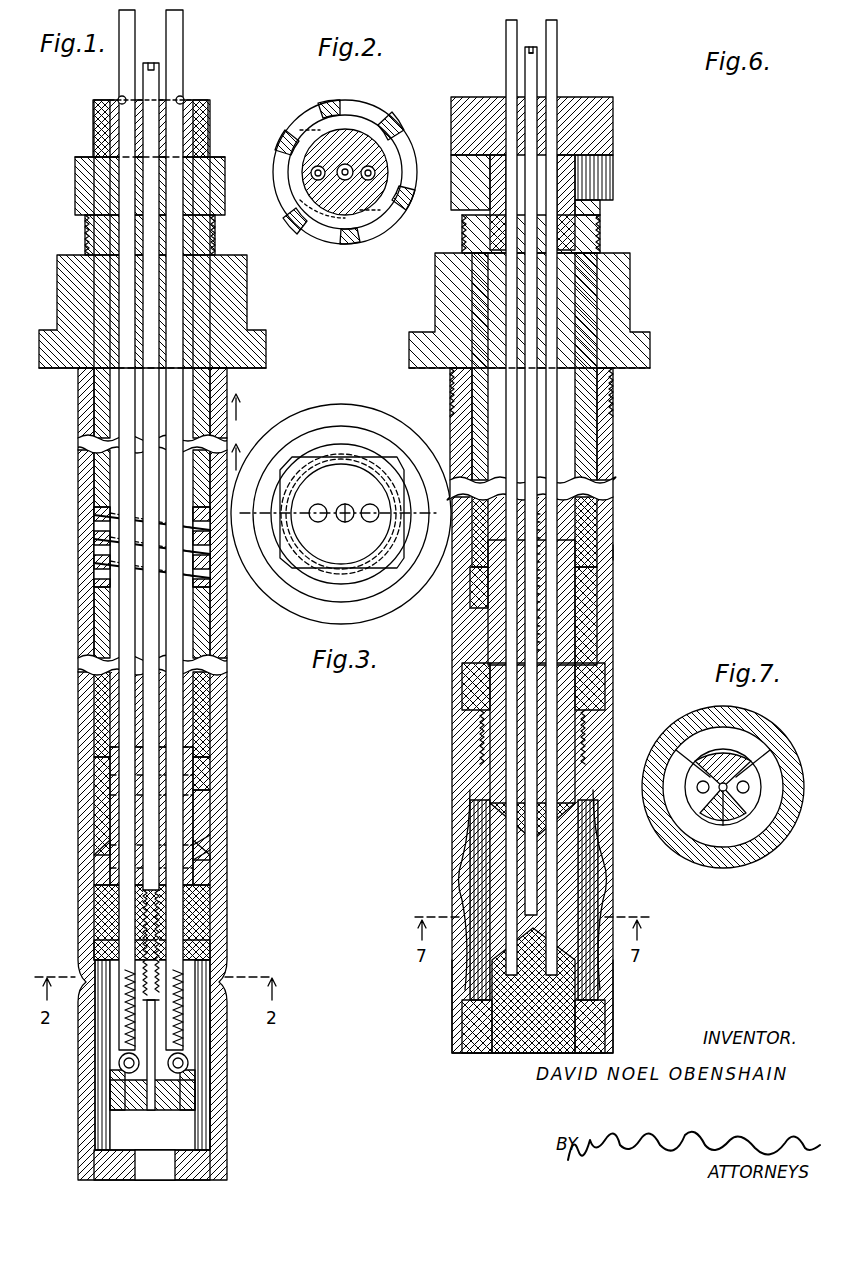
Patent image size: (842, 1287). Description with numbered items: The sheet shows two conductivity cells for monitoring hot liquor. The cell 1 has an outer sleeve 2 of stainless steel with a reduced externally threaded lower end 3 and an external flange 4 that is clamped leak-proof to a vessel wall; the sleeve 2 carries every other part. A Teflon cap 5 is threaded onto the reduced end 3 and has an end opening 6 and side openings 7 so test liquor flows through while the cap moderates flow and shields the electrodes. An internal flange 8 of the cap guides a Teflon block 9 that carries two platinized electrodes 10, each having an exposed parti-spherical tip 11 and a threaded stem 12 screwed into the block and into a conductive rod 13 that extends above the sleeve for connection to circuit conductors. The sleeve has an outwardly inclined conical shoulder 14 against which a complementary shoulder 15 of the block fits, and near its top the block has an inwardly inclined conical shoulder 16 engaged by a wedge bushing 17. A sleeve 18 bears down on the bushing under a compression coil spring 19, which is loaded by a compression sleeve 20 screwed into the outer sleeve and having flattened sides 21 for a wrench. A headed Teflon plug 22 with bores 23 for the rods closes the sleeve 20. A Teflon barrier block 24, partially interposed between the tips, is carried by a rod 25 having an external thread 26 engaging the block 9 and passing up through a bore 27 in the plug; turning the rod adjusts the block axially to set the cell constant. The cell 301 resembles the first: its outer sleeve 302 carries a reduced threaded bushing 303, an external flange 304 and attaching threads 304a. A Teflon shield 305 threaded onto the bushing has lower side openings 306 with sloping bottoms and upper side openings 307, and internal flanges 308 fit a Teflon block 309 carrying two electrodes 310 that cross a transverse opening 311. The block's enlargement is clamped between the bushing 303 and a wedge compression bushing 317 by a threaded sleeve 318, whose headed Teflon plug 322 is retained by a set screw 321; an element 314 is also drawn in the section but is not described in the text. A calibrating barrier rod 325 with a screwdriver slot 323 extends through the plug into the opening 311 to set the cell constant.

In FIG. 1, the cell 1 is at (214, 140).
In FIG. 2, the cell 1 is at (315, 146).
In FIG. 1, the outer sleeve 2 is at (230, 668).
In FIG. 1, the reduced externally threaded lower end 3 is at (212, 906).
In FIG. 1, the external flange 4 is at (268, 355).
In FIG. 3, the external flange 4 is at (328, 406).
In FIG. 1, the cap 5 is at (232, 1092).
In FIG. 2, the cap 5 is at (372, 244).
In FIG. 1, the end opening 6 is at (165, 1162).
In FIG. 1, the side openings 7 is at (226, 975).
In FIG. 2, the side openings 7 is at (340, 244).
In FIG. 1, the internal flange 8 is at (212, 950).
In FIG. 1, the Teflon block 9 is at (212, 848).
In FIG. 1, the platinized electrodes 10 is at (188, 1072).
In FIG. 1, the parti-spherical tip 11 is at (190, 1063).
In FIG. 1, the threaded stem 12 is at (184, 1020).
In FIG. 2, the threaded stem 12 is at (371, 166).
In FIG. 1, the conductive rod 13 is at (182, 830).
In FIG. 3, the conductive rod 13 is at (370, 504).
In FIG. 1, the conical shoulder 14 is at (200, 862).
In FIG. 1, the complementary shoulder 15 is at (212, 878).
In FIG. 1, the conical shoulder 16 is at (210, 788).
In FIG. 1, the wedge bushing 17 is at (200, 770).
In FIG. 1, the sleeve 18 is at (205, 640).
In FIG. 1, the compression coil spring 19 is at (94, 573).
In FIG. 1, the compression sleeve 20 is at (228, 201).
In FIG. 2, the compression sleeve 20 is at (305, 223).
In FIG. 3, the compression sleeve 20 is at (378, 450).
In FIG. 3, the flattened sides 21 is at (345, 570).
In FIG. 1, the headed Teflon plug 22 is at (135, 120).
In FIG. 3, the headed Teflon plug 22 is at (375, 470).
In FIG. 1, the bores 23 is at (184, 98).
In FIG. 1, the barrier block 24 is at (196, 1105).
In FIG. 1, the rod 25 is at (150, 1105).
In FIG. 2, the rod 25 is at (345, 162).
In FIG. 3, the rod 25 is at (345, 523).
In FIG. 1, the external thread 26 is at (143, 925).
In FIG. 1, the bore 27 is at (142, 178).
In FIG. 6, the cell 301 is at (626, 544).
In FIG. 6, the outer sleeve 302 is at (600, 490).
In FIG. 6, the reduced threaded bushing 303 is at (472, 700).
In FIG. 6, the external flange 304 is at (650, 340).
In FIG. 6, the attaching threads 304a is at (615, 396).
In FIG. 6, the shield 305 is at (622, 886).
In FIG. 7, the shield 305 is at (762, 860).
In FIG. 6, the lower side openings 306 is at (612, 1000).
In FIG. 6, the upper side openings 307 is at (600, 830).
In FIG. 6, the internal flanges 308 is at (590, 1026).
In FIG. 6, the Teflon block 309 is at (512, 1056).
In FIG. 7, the Teflon block 309 is at (727, 826).
In FIG. 6, the platinized electrodes 310 is at (558, 50).
In FIG. 6, the transverse opening 311 is at (570, 912).
In FIG. 7, the transverse opening 311 is at (786, 750).
In FIG. 6, the sleeve 314 is at (595, 652).
In FIG. 6, the wedge compression bushing 317 is at (585, 580).
In FIG. 6, the sleeve 318 is at (585, 450).
In FIG. 6, the set screw 321 is at (610, 186).
In FIG. 6, the headed Teflon plug 322 is at (614, 122).
In FIG. 6, the screwdriver slot 323 is at (537, 48).
In FIG. 6, the calibrating barrier rod 325 is at (533, 915).